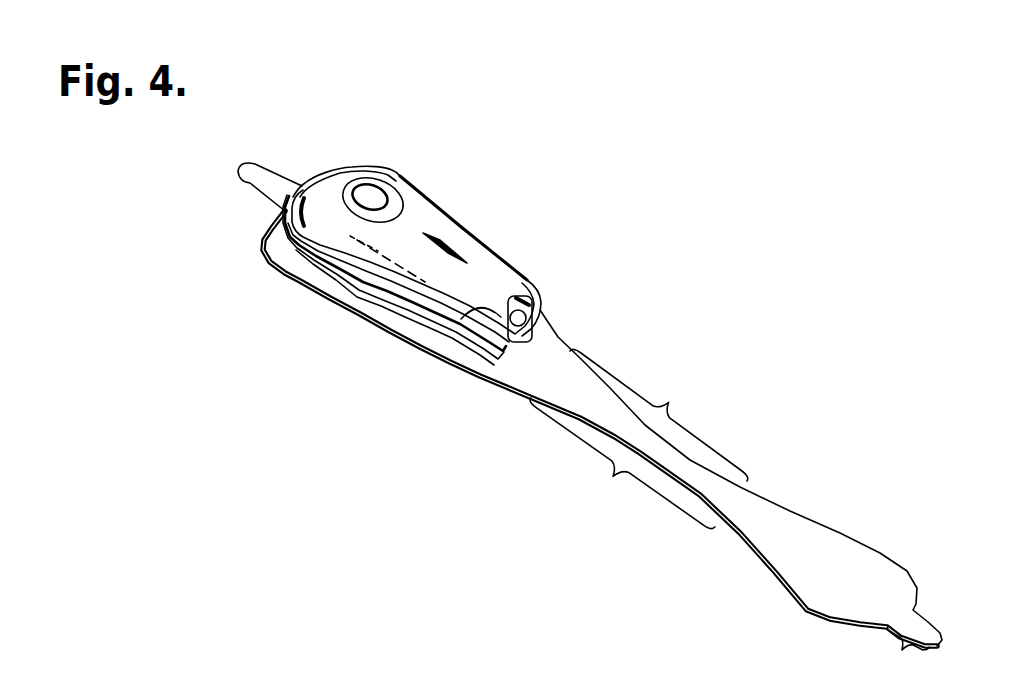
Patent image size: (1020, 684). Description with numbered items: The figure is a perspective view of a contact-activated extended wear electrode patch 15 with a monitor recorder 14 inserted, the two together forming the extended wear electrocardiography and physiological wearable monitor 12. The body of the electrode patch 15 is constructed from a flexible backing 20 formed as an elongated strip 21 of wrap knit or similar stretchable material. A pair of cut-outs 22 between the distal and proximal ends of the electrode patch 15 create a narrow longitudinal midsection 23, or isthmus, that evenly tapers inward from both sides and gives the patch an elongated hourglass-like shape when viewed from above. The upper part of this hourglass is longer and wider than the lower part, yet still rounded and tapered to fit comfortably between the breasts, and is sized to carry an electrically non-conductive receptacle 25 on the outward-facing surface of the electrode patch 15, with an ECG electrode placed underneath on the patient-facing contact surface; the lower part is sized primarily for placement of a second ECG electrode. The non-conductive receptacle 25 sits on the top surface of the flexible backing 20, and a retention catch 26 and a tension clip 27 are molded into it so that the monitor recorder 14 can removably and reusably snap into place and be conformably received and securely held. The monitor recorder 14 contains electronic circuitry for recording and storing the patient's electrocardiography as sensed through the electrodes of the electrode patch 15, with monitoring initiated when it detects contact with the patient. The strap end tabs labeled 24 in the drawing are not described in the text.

The wearable monitor 12 is at (612, 198).
The monitor recorder 14 is at (410, 178).
The electrode patch 15 is at (272, 266).
The flexible backing 20 is at (847, 545).
The elongated strip 21 is at (797, 425).
The cut-outs 22 is at (639, 438).
The narrow longitudinal midsection 23 is at (585, 448).
The strap end tabs 24 is at (232, 182).
The non-conductive receptacle 25 is at (362, 294).
The retention catch 26 is at (322, 166).
The tension clip 27 is at (540, 312).